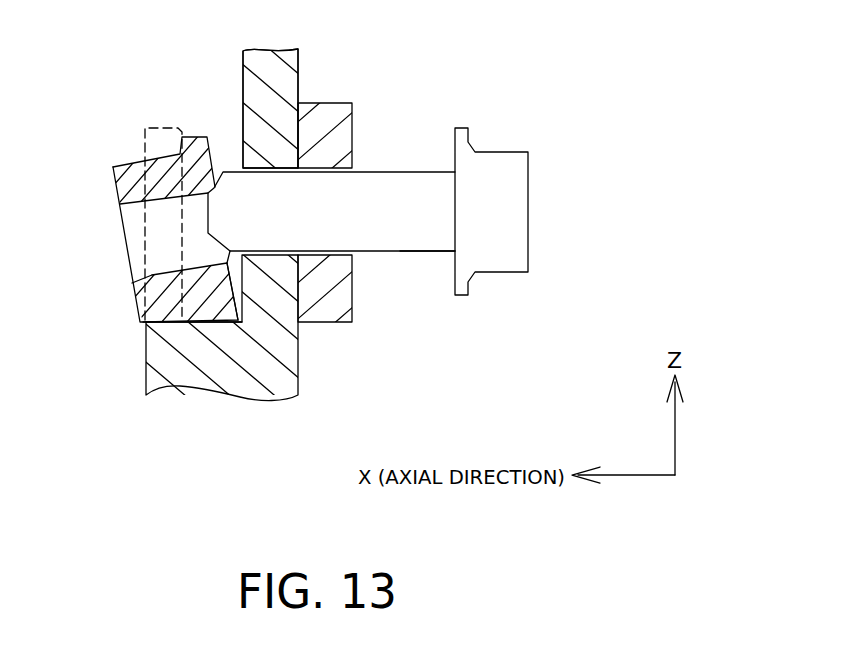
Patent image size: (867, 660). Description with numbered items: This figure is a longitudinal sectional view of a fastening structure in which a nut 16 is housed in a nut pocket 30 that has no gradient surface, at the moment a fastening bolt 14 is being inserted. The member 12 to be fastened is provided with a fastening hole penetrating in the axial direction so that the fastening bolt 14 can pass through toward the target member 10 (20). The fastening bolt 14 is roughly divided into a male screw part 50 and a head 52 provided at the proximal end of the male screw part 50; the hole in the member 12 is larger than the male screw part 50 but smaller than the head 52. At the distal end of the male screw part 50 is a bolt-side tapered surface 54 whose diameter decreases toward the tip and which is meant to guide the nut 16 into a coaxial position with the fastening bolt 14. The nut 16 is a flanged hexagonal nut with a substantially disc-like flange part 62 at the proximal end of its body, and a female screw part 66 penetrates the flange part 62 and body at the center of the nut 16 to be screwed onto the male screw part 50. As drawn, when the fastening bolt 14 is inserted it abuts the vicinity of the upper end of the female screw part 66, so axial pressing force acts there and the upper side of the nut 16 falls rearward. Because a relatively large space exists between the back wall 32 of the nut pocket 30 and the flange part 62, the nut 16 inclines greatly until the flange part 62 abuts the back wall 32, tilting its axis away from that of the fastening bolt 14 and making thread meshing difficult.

The target member 10 is at (260, 368).
The second member 20 is at (270, 108).
The member to be fastened 12 is at (327, 113).
The fastening bolt 14 is at (429, 269).
The nut 16 is at (121, 152).
The nut pocket 30 is at (105, 272).
The back wall 32 is at (177, 273).
The male screw part 50 is at (372, 187).
The head 52 is at (507, 165).
The bolt-side tapered surface 54 is at (212, 180).
The flange part 62 is at (205, 268).
The female screw part 66 is at (160, 197).